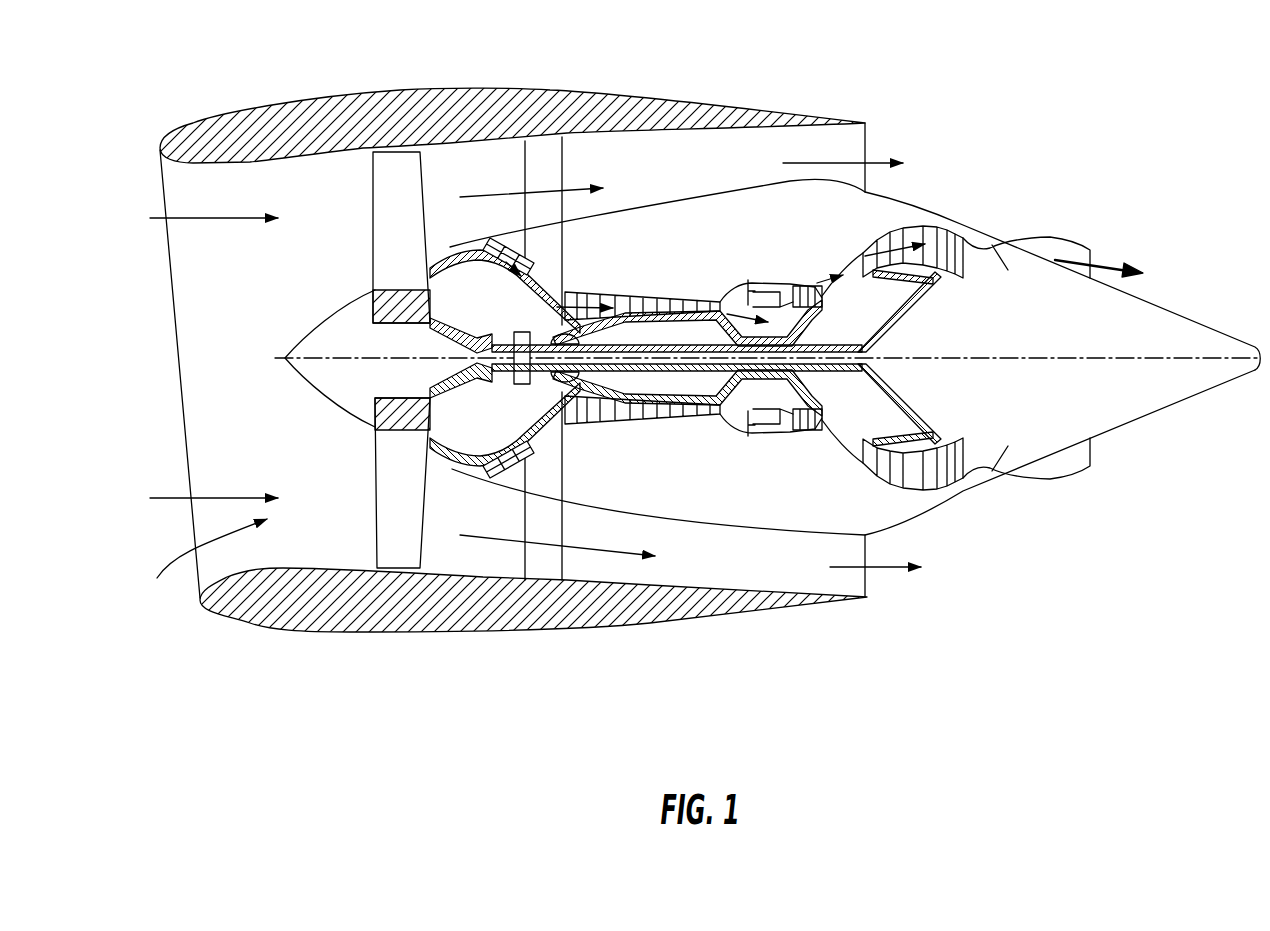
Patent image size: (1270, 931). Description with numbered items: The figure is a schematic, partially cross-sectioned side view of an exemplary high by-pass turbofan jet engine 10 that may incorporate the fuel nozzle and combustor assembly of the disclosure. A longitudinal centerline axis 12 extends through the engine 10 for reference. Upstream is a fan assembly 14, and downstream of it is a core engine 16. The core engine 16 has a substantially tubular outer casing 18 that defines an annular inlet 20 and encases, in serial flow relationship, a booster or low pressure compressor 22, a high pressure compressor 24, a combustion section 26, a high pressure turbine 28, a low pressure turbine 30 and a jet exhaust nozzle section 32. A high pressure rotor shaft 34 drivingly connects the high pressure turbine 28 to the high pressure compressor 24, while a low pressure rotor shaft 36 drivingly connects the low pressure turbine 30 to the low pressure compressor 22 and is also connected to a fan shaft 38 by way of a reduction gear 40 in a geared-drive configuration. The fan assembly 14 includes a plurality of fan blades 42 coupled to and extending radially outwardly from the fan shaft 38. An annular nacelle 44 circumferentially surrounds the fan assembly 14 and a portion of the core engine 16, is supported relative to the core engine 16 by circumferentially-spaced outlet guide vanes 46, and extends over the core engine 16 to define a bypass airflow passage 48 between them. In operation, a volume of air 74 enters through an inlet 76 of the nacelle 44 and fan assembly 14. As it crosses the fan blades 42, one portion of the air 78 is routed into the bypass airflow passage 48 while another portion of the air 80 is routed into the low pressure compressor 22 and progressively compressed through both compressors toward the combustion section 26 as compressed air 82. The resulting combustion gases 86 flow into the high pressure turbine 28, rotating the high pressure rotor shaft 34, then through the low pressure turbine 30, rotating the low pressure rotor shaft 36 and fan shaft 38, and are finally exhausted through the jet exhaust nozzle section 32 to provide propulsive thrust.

The turbofan jet engine 10 is at (696, 337).
The centerline axis 12 is at (1025, 358).
The fan assembly 14 is at (432, 305).
The core engine 16 is at (822, 315).
The outer casing 18 is at (722, 522).
The annular inlet 20 is at (467, 467).
The low pressure compressor 22 is at (527, 430).
The high pressure compressor 24 is at (593, 415).
The combustion section 26 is at (765, 420).
The high pressure turbine 28 is at (823, 447).
The low pressure turbine 30 is at (947, 497).
The jet exhaust nozzle section 32 is at (1013, 472).
The high pressure rotor shaft 34 is at (817, 327).
The low pressure rotor shaft 36 is at (897, 310).
The fan shaft 38 is at (430, 320).
The reduction gear 40 is at (515, 327).
The fan blades 42 is at (393, 186).
The nacelle 44 is at (377, 90).
The outlet guide vanes 46 is at (550, 168).
The bypass airflow passage 48 is at (688, 184).
The volume of air 74 is at (195, 215).
The inlet 76 is at (200, 569).
The bypass air 78 is at (512, 195).
The core air 80 is at (462, 250).
The compressed air 82 is at (567, 292).
The combustion gases 86 is at (810, 283).